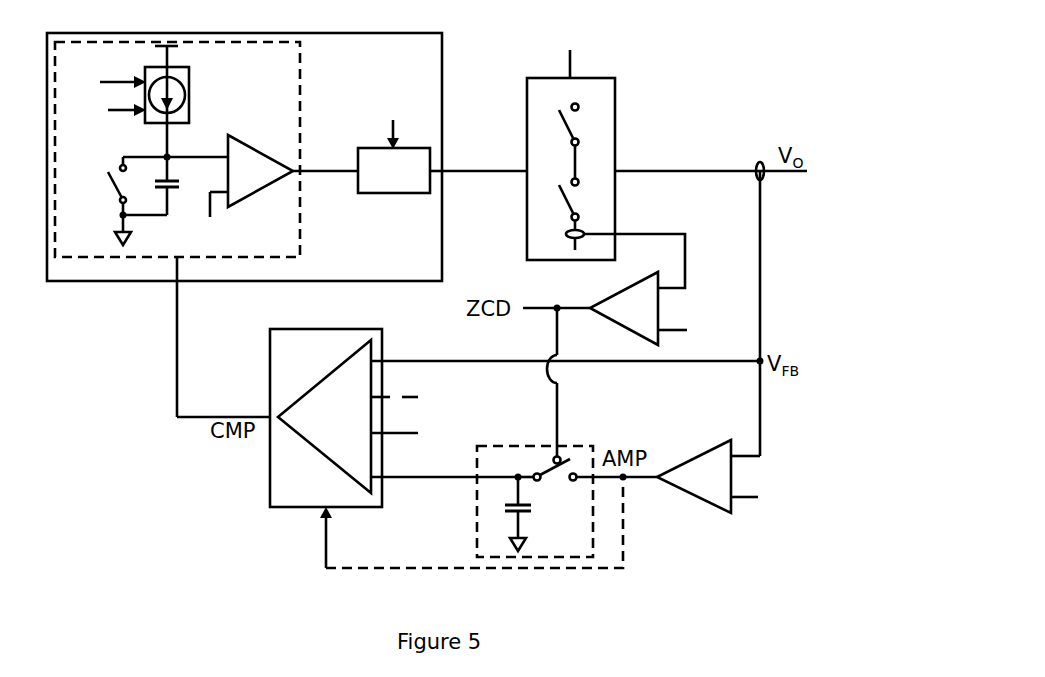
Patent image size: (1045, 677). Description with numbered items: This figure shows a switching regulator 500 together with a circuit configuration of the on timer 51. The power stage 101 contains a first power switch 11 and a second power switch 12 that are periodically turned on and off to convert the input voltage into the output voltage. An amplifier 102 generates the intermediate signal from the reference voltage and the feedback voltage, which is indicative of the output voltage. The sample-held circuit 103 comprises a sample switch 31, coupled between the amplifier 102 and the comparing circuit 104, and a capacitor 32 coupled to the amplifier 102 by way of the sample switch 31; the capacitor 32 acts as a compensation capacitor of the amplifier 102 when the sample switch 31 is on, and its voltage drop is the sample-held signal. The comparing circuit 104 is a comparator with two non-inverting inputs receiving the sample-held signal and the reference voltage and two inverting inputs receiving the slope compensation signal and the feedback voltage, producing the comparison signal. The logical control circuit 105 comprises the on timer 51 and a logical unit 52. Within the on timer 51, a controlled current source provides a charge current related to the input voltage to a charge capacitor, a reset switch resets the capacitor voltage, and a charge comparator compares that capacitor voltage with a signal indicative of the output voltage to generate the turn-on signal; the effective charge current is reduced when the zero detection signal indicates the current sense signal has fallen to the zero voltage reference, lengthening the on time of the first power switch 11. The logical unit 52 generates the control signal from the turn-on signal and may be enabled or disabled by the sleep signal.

The switching regulator 500 is at (778, 77).
The logical control circuit 105 is at (428, 67).
The on timer 51 is at (274, 78).
The logical unit 52 is at (394, 145).
The power stage 101 is at (522, 112).
The first power switch 11 is at (559, 125).
The second power switch 12 is at (559, 200).
The amplifier 102 is at (692, 392).
The comparing circuit 104 is at (314, 498).
The sample-held circuit 103 is at (550, 502).
The sample switch 31 is at (549, 465).
The capacitor 32 is at (505, 514).